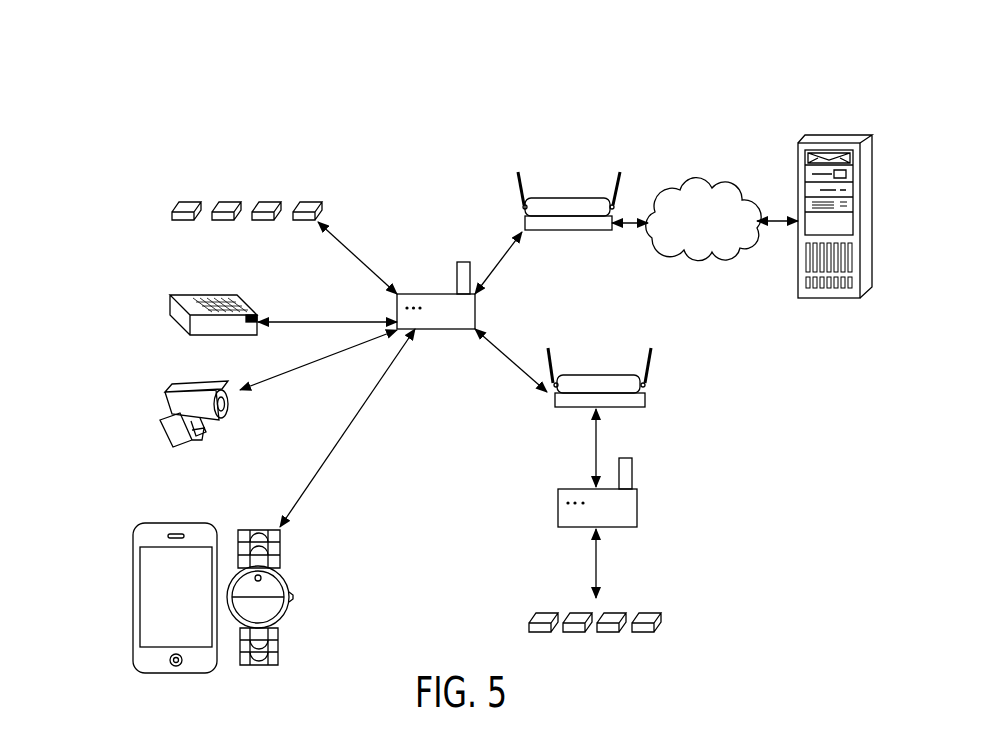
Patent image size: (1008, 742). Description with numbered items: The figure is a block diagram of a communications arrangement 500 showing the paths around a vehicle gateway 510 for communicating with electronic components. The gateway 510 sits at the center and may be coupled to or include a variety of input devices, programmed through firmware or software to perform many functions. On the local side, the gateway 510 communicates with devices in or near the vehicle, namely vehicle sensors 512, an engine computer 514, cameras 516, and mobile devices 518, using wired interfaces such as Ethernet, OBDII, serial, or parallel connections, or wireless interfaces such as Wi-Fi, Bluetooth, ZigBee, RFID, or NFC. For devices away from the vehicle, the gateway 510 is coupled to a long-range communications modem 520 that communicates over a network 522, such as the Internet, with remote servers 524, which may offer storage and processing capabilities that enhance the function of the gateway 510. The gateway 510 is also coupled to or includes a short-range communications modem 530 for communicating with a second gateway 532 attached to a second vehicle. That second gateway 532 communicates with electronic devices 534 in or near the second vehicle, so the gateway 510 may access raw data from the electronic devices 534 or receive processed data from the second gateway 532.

The system 500 is at (126, 104).
The gateway 510 is at (422, 293).
The vehicle sensors 512 is at (228, 200).
The engine computer 514 is at (176, 306).
The cameras 516 is at (163, 396).
The mobile devices 518 is at (133, 540).
The long-range communications modem 520 is at (568, 198).
The network 522 is at (693, 183).
The remote servers 524 is at (828, 134).
The short-range communications modem 530 is at (645, 386).
The second gateway 532 is at (637, 510).
The electronic devices 534 is at (661, 616).